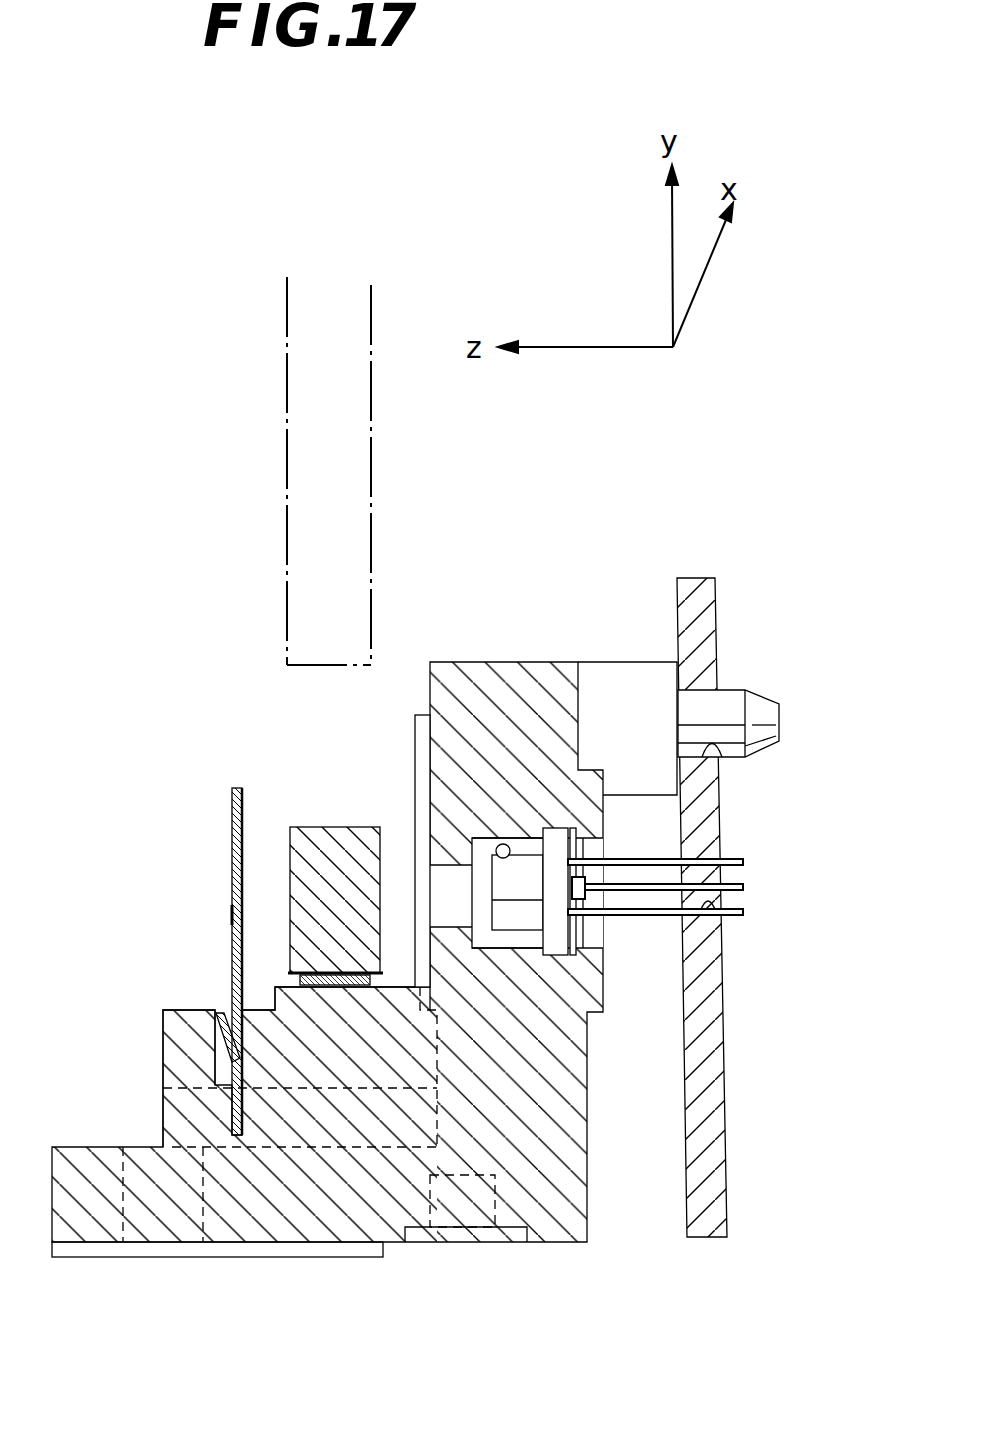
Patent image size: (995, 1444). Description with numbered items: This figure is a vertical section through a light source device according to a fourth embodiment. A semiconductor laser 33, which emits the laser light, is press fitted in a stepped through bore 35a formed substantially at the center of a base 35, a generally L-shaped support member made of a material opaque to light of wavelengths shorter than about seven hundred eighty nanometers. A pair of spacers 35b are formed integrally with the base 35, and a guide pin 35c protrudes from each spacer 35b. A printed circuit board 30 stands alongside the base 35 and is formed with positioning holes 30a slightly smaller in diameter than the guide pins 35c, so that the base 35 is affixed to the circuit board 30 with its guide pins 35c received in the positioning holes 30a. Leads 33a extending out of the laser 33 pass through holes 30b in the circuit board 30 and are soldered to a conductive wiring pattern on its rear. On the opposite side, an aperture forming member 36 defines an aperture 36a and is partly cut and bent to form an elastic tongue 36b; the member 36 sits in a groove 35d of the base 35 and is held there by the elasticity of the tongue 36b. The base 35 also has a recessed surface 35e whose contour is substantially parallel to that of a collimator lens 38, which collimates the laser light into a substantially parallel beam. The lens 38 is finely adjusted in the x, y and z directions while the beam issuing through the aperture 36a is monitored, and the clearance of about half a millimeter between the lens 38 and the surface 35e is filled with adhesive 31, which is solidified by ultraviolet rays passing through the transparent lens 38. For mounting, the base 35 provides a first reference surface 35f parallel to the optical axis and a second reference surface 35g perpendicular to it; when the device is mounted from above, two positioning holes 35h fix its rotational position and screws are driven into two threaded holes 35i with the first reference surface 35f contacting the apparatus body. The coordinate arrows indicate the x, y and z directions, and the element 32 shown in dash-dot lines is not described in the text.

The printed circuit board 30 is at (727, 1088).
The positioning holes 30a is at (722, 757).
The holes 30b is at (720, 920).
The adhesive 31 is at (338, 983).
The optical rod 32 is at (287, 455).
The semiconductor laser 33 is at (555, 848).
The leads 33a is at (745, 912).
The base 35 is at (500, 662).
The stepped through bore 35a is at (499, 846).
The spacers 35b is at (622, 662).
The guide pins 35c is at (722, 690).
The groove 35d is at (215, 1068).
The recessed surface 35e is at (275, 985).
The first reference surface 35f is at (78, 1260).
The second reference surface 35g is at (415, 780).
The positioning holes 35h is at (440, 1227).
The threaded holes 35i is at (123, 1200).
The aperture forming member 36 is at (232, 860).
The aperture 36a is at (235, 915).
The elastic tongue 36b is at (222, 1012).
The collimator lens 38 is at (323, 827).